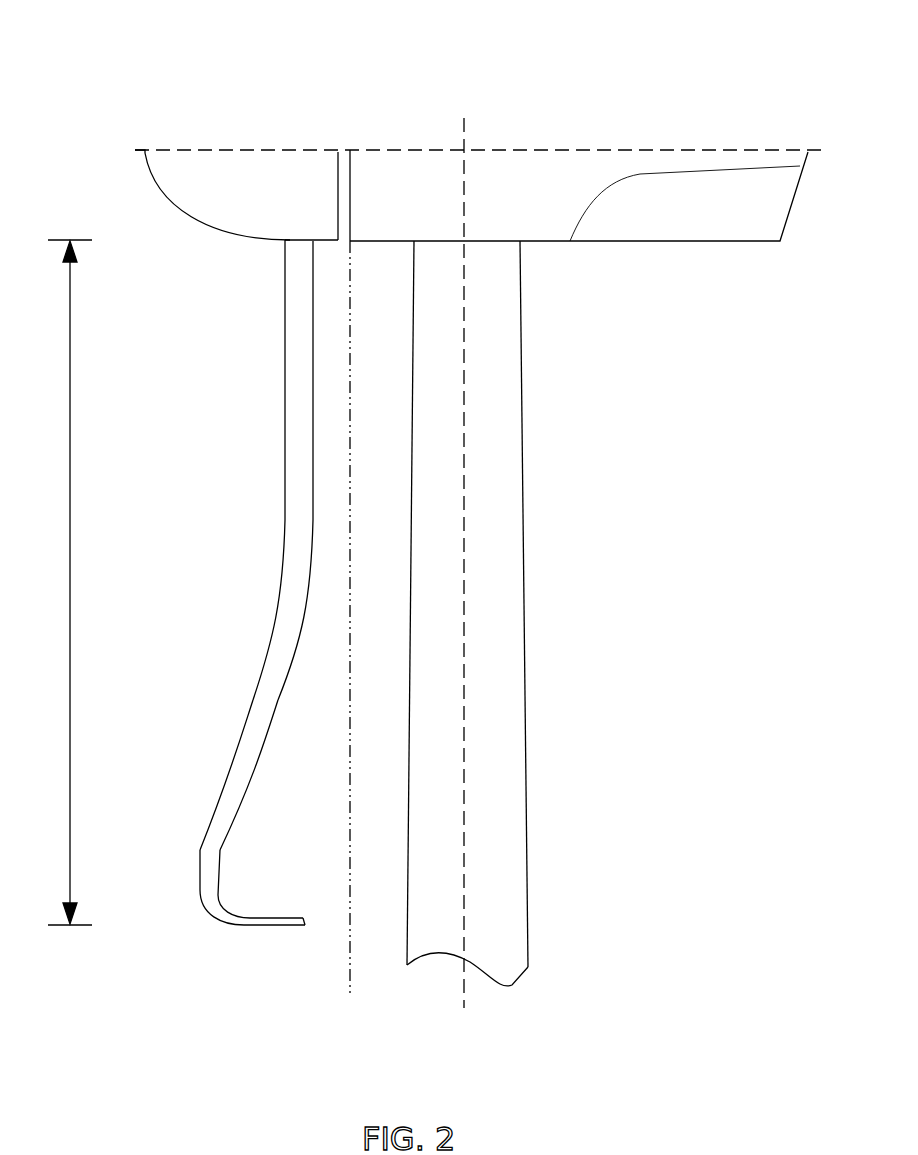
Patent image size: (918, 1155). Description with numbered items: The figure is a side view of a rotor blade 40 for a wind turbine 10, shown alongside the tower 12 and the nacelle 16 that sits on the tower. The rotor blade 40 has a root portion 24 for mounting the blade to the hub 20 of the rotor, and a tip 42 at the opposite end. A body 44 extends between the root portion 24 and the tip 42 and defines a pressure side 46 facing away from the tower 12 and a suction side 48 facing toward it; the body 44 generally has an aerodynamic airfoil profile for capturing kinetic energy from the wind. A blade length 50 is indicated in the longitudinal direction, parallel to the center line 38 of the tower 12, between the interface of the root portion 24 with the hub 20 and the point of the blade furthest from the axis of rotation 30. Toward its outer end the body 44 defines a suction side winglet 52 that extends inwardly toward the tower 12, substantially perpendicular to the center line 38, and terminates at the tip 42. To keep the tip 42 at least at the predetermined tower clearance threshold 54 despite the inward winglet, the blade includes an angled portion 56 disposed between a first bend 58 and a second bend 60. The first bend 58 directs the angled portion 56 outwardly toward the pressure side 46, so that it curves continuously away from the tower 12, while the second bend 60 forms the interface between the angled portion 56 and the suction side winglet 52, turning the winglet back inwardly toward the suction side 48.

The wind turbine 10 is at (675, 95).
The tower 12 is at (523, 612).
The nacelle 16 is at (688, 224).
The hub 20 is at (253, 173).
The root portion 24 is at (283, 248).
The axis of rotation 30 is at (522, 150).
The center line 38 is at (470, 980).
The rotor blade 40 is at (220, 585).
The tip 42 is at (313, 930).
The body 44 is at (298, 455).
The pressure side 46 is at (285, 357).
The suction side 48 is at (313, 520).
The blade length 50 is at (72, 452).
The suction side winglet 52 is at (245, 922).
The tower clearance threshold 54 is at (350, 965).
The angled portion 56 is at (250, 750).
The first bend 58 is at (290, 618).
The second bend 60 is at (210, 889).